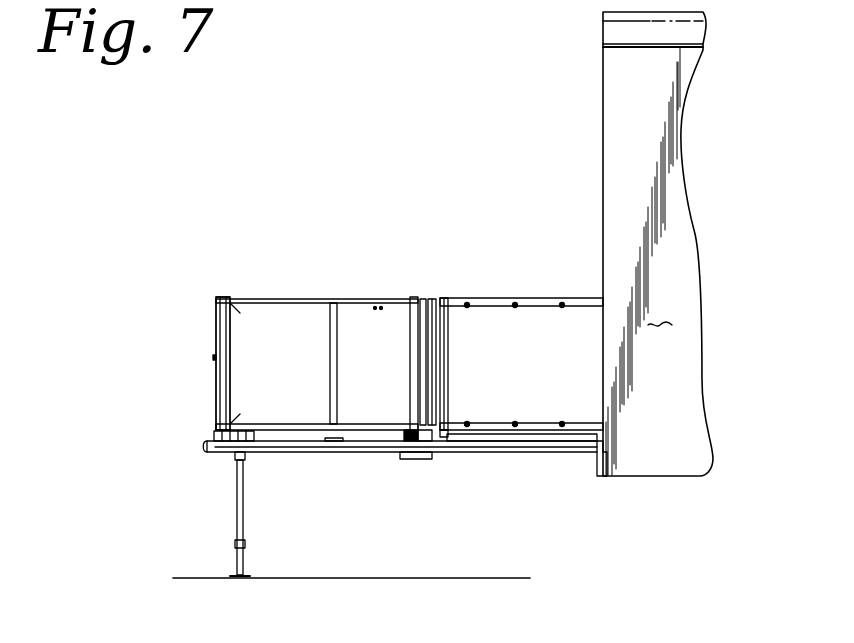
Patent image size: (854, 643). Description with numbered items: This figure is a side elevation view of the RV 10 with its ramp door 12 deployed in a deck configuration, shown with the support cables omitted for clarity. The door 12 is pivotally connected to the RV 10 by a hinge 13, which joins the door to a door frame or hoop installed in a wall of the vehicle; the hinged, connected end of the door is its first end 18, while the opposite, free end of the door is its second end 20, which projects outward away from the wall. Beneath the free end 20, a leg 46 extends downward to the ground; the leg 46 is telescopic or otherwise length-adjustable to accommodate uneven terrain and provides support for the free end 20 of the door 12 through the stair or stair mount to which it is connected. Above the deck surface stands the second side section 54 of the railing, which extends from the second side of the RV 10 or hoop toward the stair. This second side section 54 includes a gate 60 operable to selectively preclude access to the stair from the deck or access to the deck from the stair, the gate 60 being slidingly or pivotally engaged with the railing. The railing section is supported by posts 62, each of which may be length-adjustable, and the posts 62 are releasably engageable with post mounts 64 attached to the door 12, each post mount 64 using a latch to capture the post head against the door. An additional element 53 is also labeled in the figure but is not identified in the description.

The RV 10 is at (664, 492).
The ramp door 12 is at (375, 452).
The hinge 13 is at (600, 455).
The first end 18 is at (562, 466).
The second end 20 is at (205, 446).
The leg 46 is at (246, 546).
The gate post 53 is at (215, 355).
The second side section 54 is at (522, 298).
The gate 60 is at (302, 299).
The posts 62 is at (430, 438).
The post mounts 64 is at (424, 441).